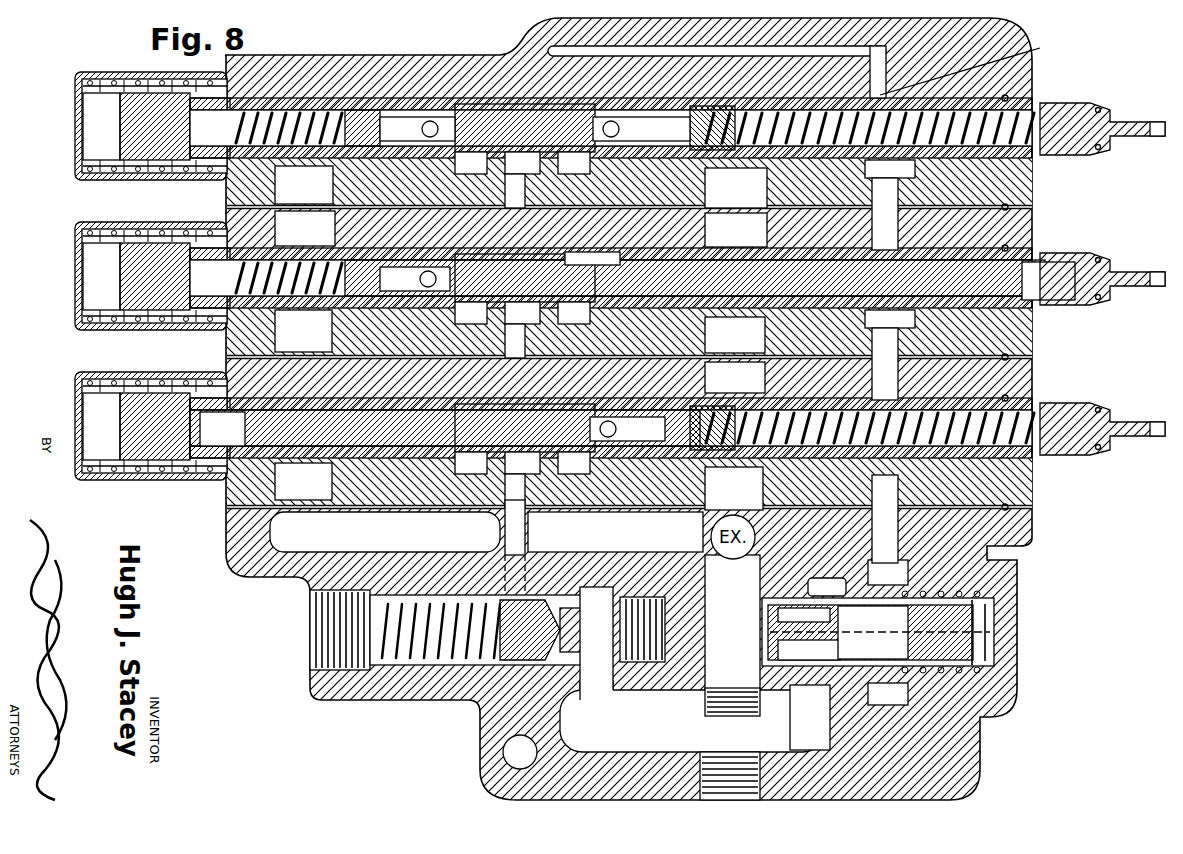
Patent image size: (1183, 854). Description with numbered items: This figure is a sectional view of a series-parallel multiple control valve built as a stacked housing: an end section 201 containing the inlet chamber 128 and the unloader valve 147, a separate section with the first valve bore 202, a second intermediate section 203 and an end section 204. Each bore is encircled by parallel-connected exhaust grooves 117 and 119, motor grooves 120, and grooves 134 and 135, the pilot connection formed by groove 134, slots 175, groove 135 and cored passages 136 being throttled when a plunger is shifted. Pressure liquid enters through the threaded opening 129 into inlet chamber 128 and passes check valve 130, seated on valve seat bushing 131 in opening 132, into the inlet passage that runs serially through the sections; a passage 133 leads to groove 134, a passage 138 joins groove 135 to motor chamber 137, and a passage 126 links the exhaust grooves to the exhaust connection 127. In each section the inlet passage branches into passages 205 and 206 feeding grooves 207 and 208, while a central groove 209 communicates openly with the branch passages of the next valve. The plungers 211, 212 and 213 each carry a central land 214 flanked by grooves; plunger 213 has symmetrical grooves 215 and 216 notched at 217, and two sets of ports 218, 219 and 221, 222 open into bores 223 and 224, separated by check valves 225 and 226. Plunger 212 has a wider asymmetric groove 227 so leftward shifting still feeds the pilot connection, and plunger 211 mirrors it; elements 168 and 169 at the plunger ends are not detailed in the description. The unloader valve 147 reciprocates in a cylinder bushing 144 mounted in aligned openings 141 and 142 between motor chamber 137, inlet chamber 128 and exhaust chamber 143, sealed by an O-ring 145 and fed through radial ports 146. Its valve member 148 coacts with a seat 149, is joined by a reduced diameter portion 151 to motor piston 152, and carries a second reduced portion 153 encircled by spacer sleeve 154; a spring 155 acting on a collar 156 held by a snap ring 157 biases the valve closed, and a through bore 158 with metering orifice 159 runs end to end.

The exhaust groove 117 is at (290, 70).
The exhaust groove 119 is at (765, 98).
The motor groove 120 is at (405, 97).
The passage 126 is at (300, 544).
The exhaust connection 127 is at (734, 488).
The inlet chamber 128 is at (664, 744).
The threaded opening 129 is at (748, 760).
The check valve 130 is at (560, 632).
The valve seat bushing 131 is at (565, 650).
The opening 132 is at (570, 605).
The passage 133 is at (806, 98).
The groove 134 is at (875, 98).
The groove 135 is at (905, 343).
The cored passage 136 is at (905, 195).
The motor chamber 137 is at (886, 694).
The passage 138 is at (827, 587).
The opening 141 is at (845, 722).
The opening 142 is at (760, 577).
The exhaust chamber 143 is at (726, 681).
The cylinder bushing 144 is at (865, 618).
The O-ring 145 is at (816, 697).
The radial ports 146 is at (822, 658).
The unloader valve 147 is at (965, 622).
The valve member 148 is at (735, 626).
The seat 149 is at (790, 658).
The reduced diameter portion 151 is at (802, 613).
The motor piston 152 is at (886, 572).
The second reduced diameter portion 153 is at (990, 651).
The sleeve 154 is at (1015, 577).
The spring 155 is at (990, 707).
The collar 156 is at (990, 679).
The snap ring 157 is at (1005, 600).
The bore 158 is at (913, 618).
The metering orifice 159 is at (748, 643).
The cap 168 is at (78, 104).
The cap housing 169 is at (75, 145).
The slots 175 is at (851, 373).
The end section 201 is at (395, 700).
The first valve bore 202 is at (1032, 390).
The second intermediate section 203 is at (1062, 337).
The end section 204 is at (1060, 193).
The branching passage 205 is at (486, 334).
The branching passage 206 is at (547, 334).
The groove 207 is at (483, 100).
The groove 208 is at (590, 100).
The central groove 209 is at (521, 276).
The valve plunger 211 is at (1090, 400).
The valve plunger 212 is at (1062, 250).
The valve plunger 213 is at (1065, 100).
The central land 214 is at (522, 96).
The groove 215 is at (481, 185).
The groove 216 is at (553, 100).
The notches 217 is at (457, 97).
The ports 218 is at (432, 98).
The ports 219 is at (368, 98).
The ports 221 is at (662, 100).
The ports 222 is at (693, 100).
The bore 223 is at (327, 281).
The bore 224 is at (640, 279).
The check valve 225 is at (304, 185).
The check valve 226 is at (732, 100).
The groove 227 is at (592, 258).